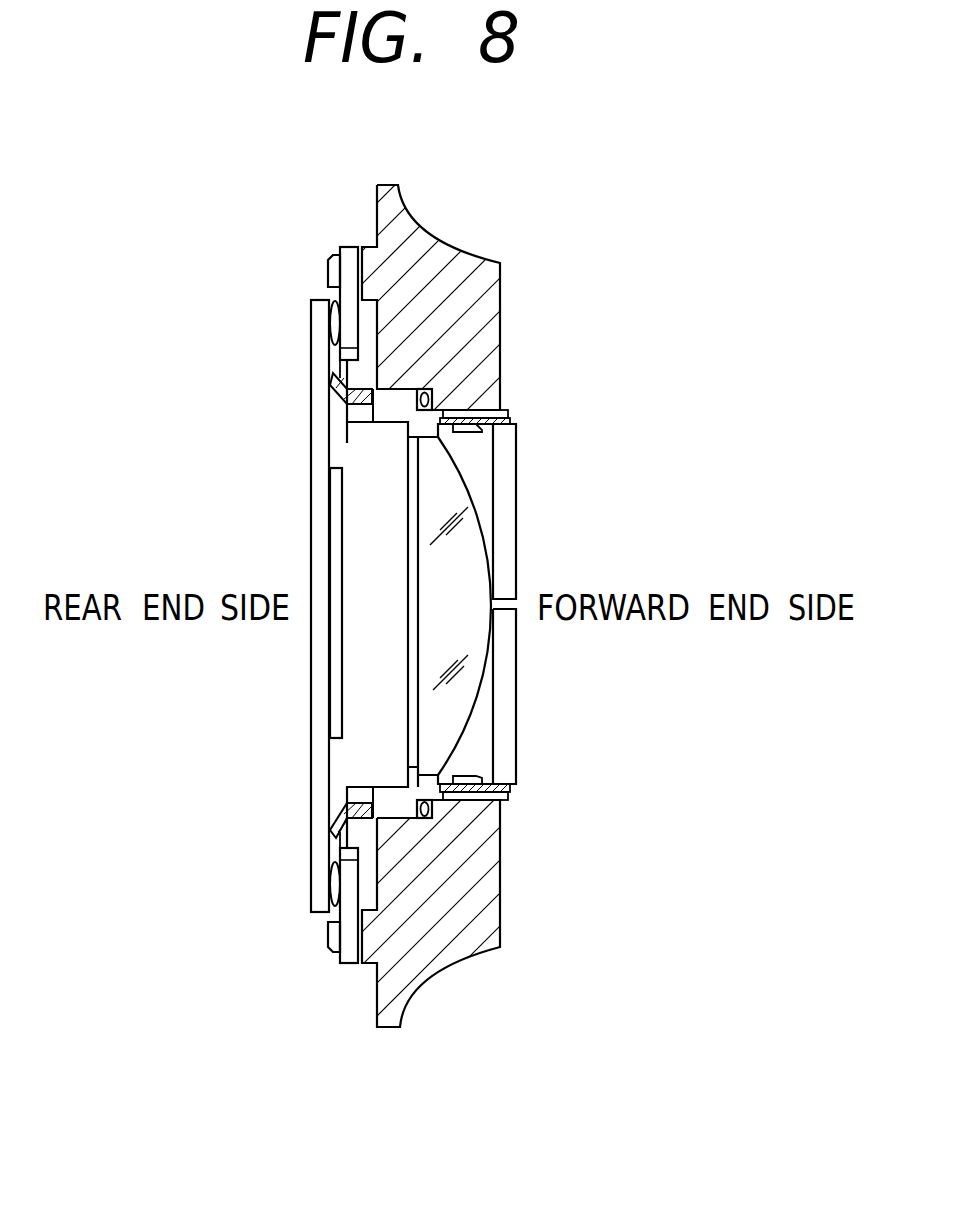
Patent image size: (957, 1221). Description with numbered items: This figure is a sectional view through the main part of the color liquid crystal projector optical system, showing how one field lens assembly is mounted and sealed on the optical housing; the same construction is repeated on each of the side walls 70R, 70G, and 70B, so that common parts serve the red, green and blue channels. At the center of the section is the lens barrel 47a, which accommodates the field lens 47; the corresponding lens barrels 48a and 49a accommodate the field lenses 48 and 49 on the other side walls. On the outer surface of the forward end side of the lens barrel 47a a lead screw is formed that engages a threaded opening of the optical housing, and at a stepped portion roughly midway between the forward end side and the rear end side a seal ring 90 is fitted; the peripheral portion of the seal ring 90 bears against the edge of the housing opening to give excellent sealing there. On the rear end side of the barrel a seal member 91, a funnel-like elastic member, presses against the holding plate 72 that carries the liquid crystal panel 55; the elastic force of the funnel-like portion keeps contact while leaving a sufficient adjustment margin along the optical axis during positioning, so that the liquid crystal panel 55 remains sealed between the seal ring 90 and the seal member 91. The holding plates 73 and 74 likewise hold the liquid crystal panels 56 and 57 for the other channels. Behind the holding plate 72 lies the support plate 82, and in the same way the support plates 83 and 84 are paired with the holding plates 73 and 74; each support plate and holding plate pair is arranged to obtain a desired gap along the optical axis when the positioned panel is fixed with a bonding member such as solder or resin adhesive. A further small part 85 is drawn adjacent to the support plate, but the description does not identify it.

The side wall 70G is at (478, 610).
The side wall 70B is at (478, 610).
The side wall 70R is at (482, 292).
The field lens 47 is at (565, 610).
The field lens 48 is at (565, 610).
The field lens 49 is at (480, 672).
The lens barrel 47a is at (604, 511).
The lens barrel 48a is at (604, 511).
The lens barrel 49a is at (497, 458).
The liquid crystal panel 55 is at (225, 603).
The liquid crystal panel 56 is at (225, 603).
The liquid crystal panel 57 is at (333, 690).
The holding plate 72 is at (225, 605).
The holding plate 73 is at (225, 605).
The holding plate 74 is at (315, 340).
The support plate 82 is at (270, 569).
The support plate 83 is at (270, 569).
The support plate 84 is at (353, 262).
The fixing member 85 is at (327, 273).
The seal ring 90 is at (432, 806).
The seal member 91 is at (330, 399).